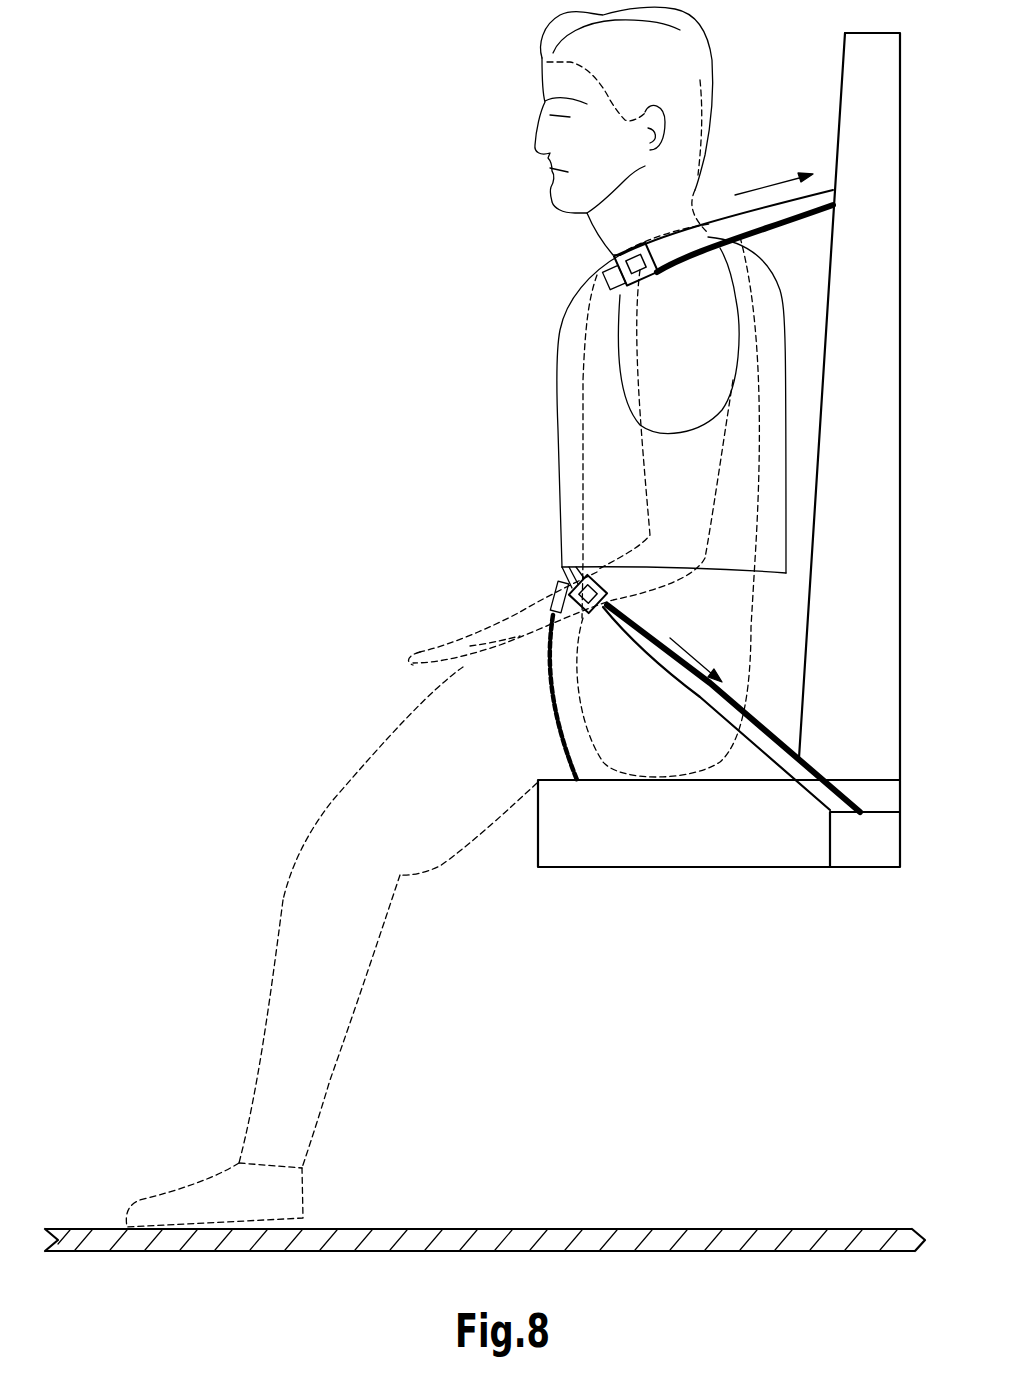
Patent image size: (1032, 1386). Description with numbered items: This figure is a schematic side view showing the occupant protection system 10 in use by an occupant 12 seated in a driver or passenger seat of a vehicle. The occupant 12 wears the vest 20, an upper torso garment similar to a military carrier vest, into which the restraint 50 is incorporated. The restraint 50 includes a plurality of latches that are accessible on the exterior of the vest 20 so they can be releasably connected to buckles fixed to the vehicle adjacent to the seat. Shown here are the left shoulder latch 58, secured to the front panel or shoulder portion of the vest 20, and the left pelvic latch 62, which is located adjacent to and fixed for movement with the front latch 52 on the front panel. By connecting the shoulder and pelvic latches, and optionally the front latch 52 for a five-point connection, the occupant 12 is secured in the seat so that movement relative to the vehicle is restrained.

The occupant protection system 10 is at (581, 492).
The occupant 12 is at (520, 108).
The vest 20 is at (550, 440).
The restraint 50 is at (545, 382).
The front latch 52 is at (556, 590).
The left shoulder latch 58 is at (616, 258).
The left pelvic latch 62 is at (587, 572).